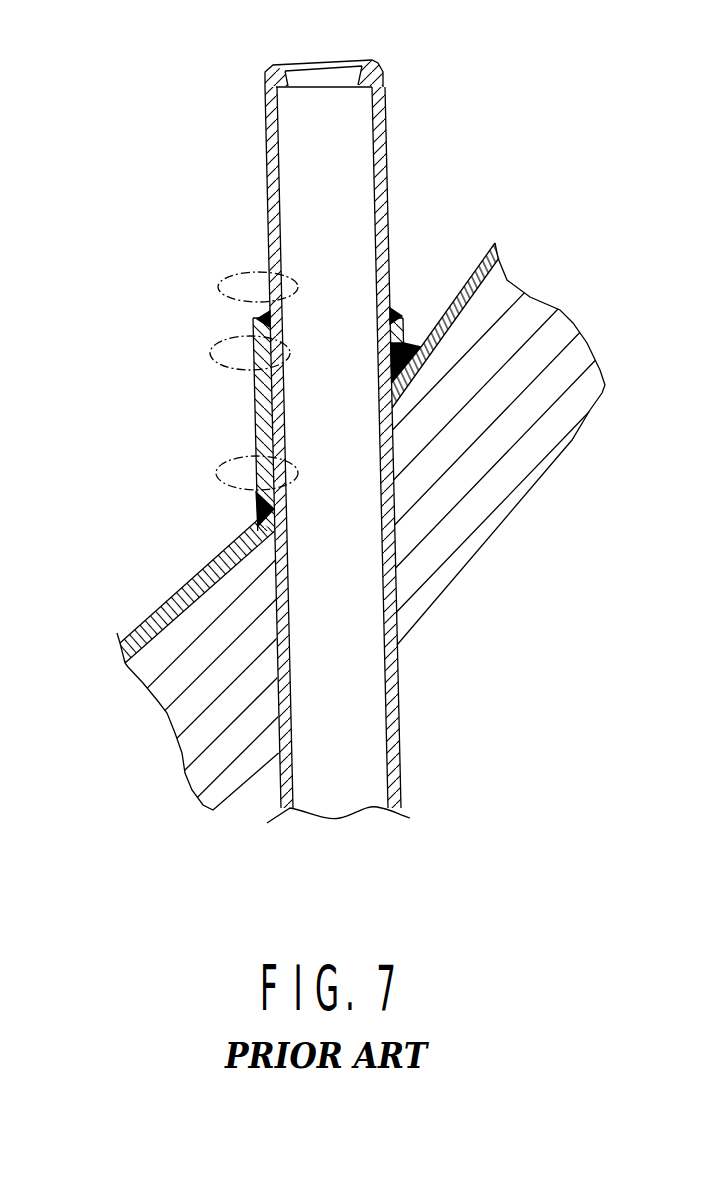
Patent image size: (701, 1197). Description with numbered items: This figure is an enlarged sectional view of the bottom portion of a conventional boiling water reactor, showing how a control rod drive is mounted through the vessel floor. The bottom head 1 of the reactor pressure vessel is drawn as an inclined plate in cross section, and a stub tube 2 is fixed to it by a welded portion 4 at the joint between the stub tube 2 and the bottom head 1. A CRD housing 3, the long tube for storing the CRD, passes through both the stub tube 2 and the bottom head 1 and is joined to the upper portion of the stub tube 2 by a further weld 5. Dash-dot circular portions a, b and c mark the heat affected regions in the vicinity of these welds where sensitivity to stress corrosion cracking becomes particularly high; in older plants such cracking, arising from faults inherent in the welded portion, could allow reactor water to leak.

The bottom head 1 is at (127, 672).
The stub tube 2 is at (256, 405).
The CRD housing 3 is at (264, 129).
The welded portion 4 is at (256, 512).
The weld (sleeve to pipe) 5 is at (256, 320).
The circular portion a is at (257, 271).
The circular portion b is at (234, 350).
The circular portion c is at (240, 473).